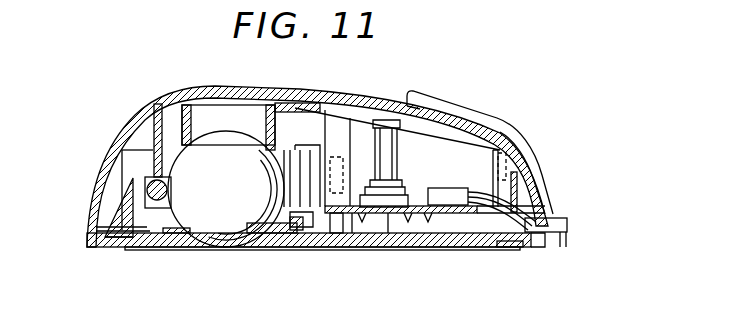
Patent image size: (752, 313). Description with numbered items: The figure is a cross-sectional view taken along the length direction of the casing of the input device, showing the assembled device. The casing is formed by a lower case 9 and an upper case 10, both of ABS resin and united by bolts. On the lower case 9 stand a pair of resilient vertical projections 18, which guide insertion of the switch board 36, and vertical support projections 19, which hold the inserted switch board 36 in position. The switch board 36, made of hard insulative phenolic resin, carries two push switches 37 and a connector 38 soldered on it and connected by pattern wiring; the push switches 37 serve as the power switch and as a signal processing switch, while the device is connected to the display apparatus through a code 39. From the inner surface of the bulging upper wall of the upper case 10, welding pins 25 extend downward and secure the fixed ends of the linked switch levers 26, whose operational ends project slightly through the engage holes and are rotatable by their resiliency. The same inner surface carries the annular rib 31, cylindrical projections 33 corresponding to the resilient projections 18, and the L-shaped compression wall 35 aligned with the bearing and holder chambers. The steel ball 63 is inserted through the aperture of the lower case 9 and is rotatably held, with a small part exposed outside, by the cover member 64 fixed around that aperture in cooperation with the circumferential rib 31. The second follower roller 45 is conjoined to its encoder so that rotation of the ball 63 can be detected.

The lower case 9 is at (482, 250).
The upper case 10 is at (171, 90).
The resilient vertical projections 18 is at (322, 236).
The vertical support projections 19 is at (393, 238).
The welding pins 25 is at (305, 101).
The switch levers 26 is at (468, 117).
The annular rib 31 is at (197, 126).
The cylindrical projections 33 is at (348, 137).
The L-shaped compression wall 35 is at (150, 165).
The switch board 36 is at (348, 244).
The push switches 37 is at (406, 186).
The connector 38 is at (447, 248).
The code 39 is at (557, 242).
The second follower roller 45 is at (143, 238).
The ball 63 is at (223, 238).
The cover member 64 is at (271, 241).